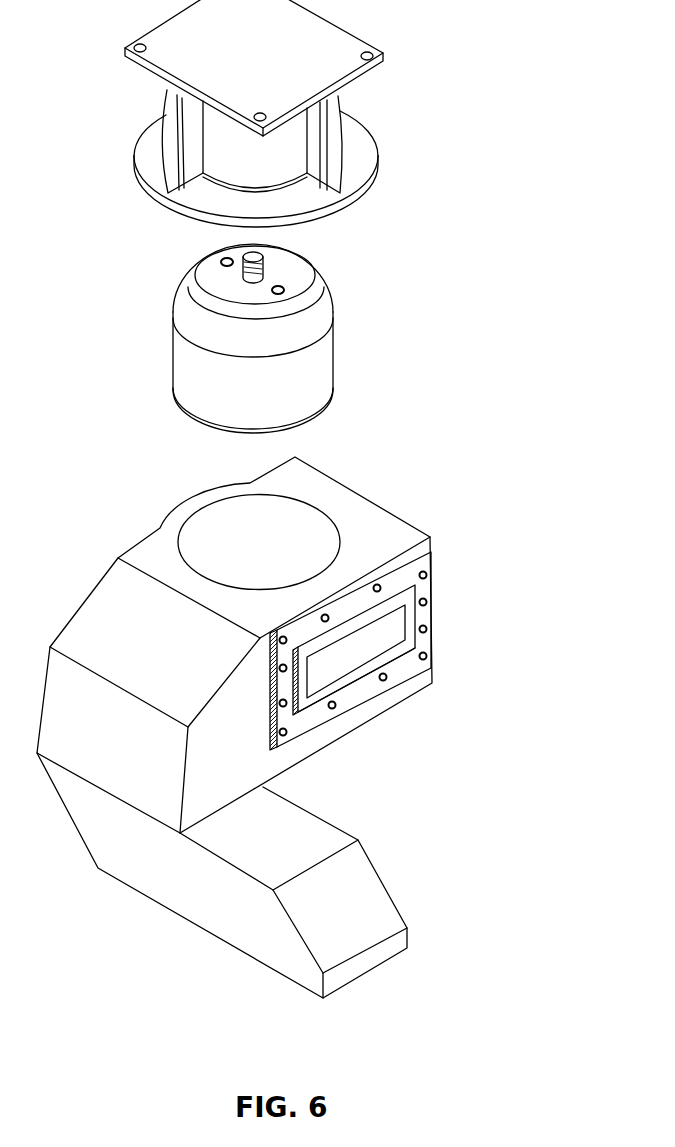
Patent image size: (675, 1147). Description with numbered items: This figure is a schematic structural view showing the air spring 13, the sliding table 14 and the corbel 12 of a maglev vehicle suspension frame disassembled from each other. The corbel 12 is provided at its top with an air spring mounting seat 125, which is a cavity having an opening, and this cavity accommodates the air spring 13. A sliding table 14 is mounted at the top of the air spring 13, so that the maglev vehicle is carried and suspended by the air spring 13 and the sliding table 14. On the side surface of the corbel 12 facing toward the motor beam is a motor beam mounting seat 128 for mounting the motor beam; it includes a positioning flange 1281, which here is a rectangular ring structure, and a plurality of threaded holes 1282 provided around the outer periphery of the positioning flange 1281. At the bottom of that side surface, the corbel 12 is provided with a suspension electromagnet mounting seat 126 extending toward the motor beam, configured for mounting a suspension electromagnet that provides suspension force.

The corbel 12 is at (375, 532).
The air spring 13 is at (317, 373).
The sliding table 14 is at (347, 162).
The air spring mounting seat 125 is at (258, 550).
The suspension electromagnet mounting seat 126 is at (255, 920).
The motor beam mounting seat 128 is at (303, 718).
The positioning flange 1281 is at (397, 653).
The threaded hole 1282 is at (423, 570).